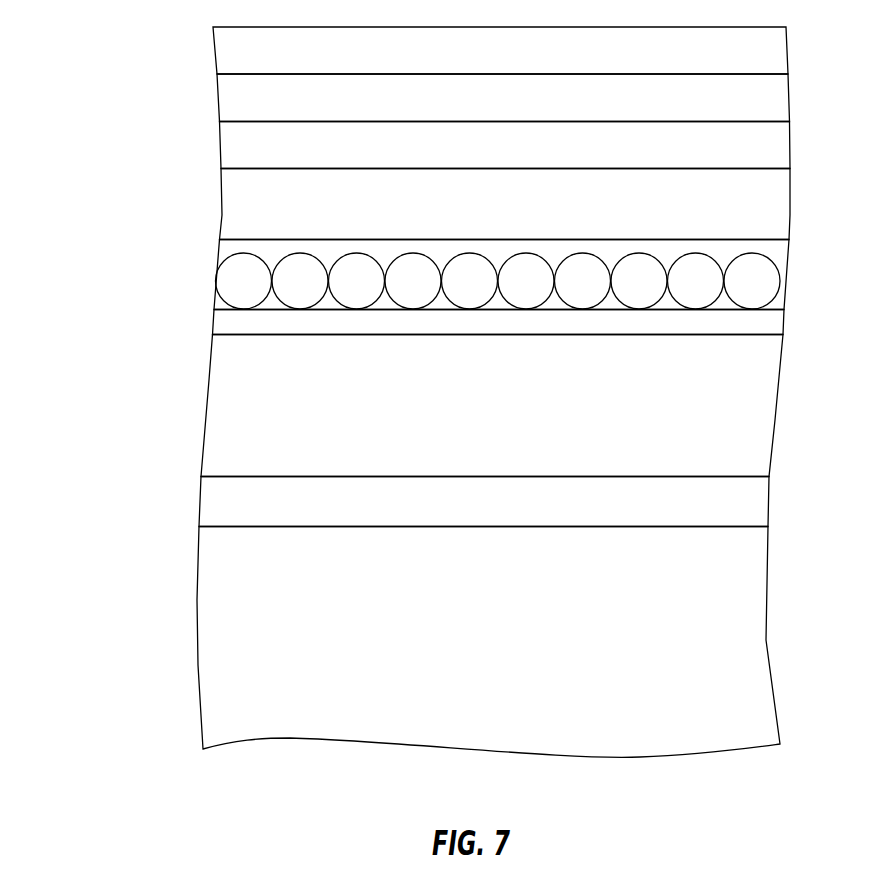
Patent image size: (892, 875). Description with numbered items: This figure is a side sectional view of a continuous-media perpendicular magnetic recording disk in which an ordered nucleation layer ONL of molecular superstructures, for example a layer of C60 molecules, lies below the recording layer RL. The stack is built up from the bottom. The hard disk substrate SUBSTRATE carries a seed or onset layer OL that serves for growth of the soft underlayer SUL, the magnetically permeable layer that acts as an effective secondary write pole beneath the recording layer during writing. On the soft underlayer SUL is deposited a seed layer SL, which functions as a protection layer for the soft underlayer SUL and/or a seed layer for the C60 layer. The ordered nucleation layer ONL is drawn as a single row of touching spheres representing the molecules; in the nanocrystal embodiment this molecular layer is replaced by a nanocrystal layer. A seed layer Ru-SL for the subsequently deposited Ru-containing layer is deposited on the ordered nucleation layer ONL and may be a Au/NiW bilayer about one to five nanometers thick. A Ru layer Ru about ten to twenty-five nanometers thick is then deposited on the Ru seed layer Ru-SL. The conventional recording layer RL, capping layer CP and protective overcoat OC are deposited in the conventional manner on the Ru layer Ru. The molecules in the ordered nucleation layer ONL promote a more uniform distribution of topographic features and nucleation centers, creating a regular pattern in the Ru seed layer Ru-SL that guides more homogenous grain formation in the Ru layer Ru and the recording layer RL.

The protective overcoat OC is at (223, 42).
The capping layer CP is at (229, 92).
The recording layer RL is at (230, 145).
The Ru layer Ru is at (230, 193).
The Ru seed layer Ru-SL is at (228, 246).
The ordered nucleation layer ONL is at (794, 263).
The seed layer SL is at (222, 320).
The soft underlayer SUL is at (214, 385).
The onset layer OL is at (208, 495).
The substrate SUBSTRATE is at (211, 665).